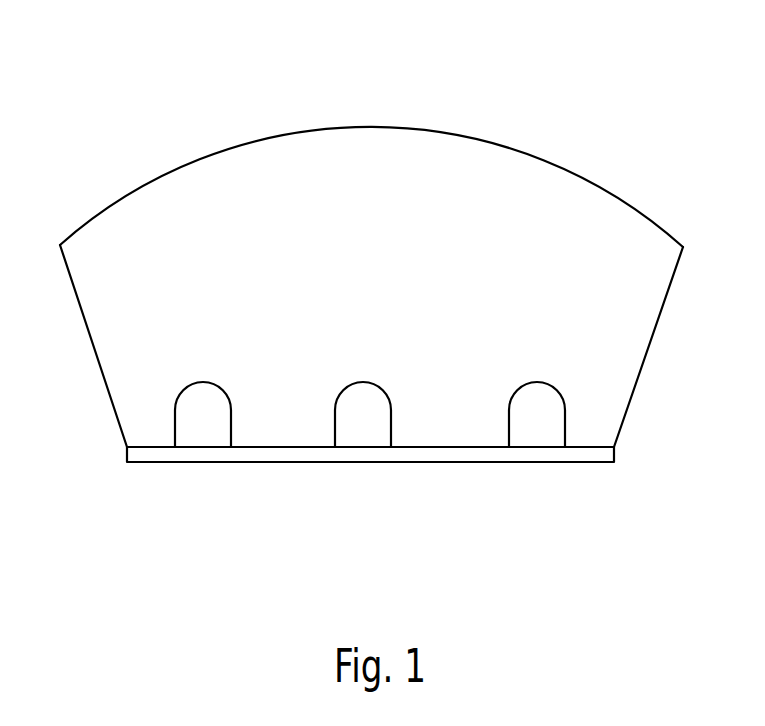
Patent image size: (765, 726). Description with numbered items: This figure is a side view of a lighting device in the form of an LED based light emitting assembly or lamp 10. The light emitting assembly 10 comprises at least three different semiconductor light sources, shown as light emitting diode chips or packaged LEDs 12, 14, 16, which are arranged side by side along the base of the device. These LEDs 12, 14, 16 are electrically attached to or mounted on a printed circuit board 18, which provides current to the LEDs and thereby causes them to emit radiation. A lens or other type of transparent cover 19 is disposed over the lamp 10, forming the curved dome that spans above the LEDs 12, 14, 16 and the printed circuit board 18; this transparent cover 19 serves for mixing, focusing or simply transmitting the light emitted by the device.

The light emitting assembly 10 is at (150, 126).
The light emitting diode 12 is at (203, 378).
The light emitting diode 14 is at (364, 378).
The light emitting diode 16 is at (537, 394).
The printed circuit board 18 is at (437, 472).
The transparent cover 19 is at (557, 160).